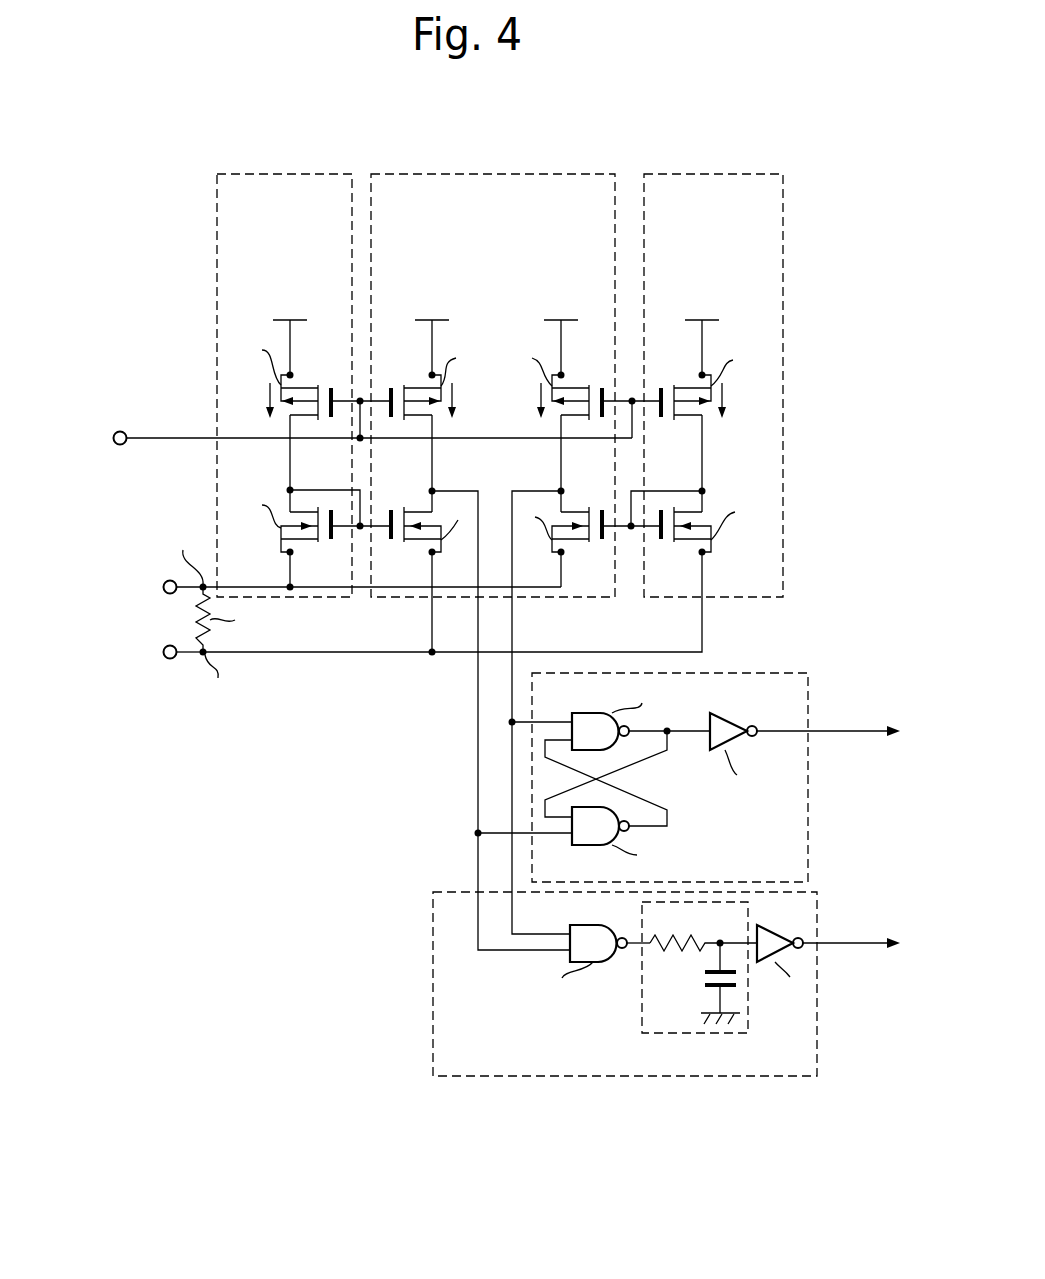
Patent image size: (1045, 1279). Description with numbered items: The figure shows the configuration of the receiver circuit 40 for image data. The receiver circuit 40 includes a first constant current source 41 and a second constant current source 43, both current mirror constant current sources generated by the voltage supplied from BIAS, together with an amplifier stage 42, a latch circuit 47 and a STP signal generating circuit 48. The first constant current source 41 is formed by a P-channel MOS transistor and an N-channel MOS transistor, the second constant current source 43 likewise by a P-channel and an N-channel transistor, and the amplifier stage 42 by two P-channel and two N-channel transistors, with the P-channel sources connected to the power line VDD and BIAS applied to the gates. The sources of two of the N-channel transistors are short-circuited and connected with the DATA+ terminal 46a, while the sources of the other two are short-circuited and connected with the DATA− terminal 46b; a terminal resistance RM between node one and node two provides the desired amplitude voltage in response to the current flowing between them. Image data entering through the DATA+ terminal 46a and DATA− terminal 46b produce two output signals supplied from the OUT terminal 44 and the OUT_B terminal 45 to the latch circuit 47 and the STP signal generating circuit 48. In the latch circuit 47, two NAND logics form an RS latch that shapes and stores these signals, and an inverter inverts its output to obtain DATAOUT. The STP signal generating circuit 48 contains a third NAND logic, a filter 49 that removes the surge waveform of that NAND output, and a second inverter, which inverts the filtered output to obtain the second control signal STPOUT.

The receiver circuit 40 is at (363, 1133).
The first constant current source 41 is at (283, 174).
The amplifier stage 42 is at (509, 174).
The second constant current source 43 is at (727, 174).
The OUT terminal 44 is at (432, 491).
The OUT_B terminal 45 is at (561, 491).
The DATA+ terminal 46a is at (163, 587).
The DATA− terminal 46b is at (163, 652).
The latch circuit 47 is at (795, 673).
The STP signal generating circuit 48 is at (817, 900).
The filter 49 is at (642, 1025).